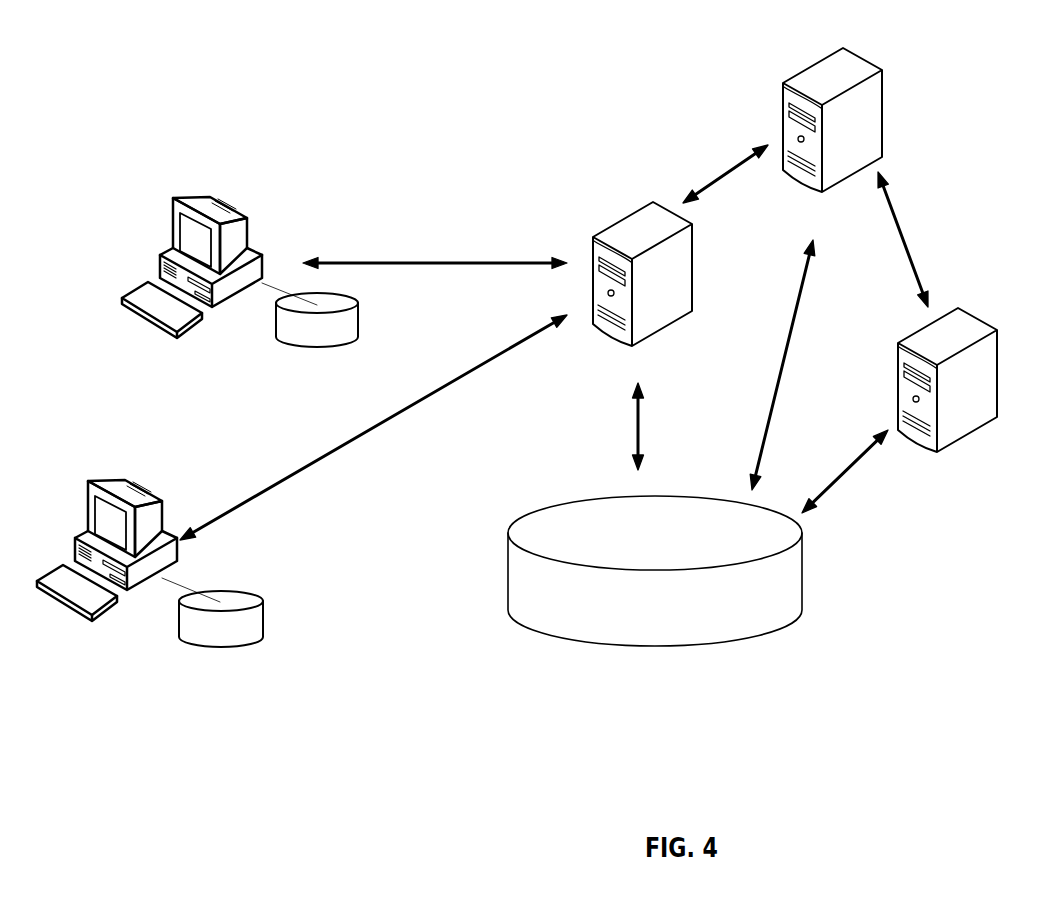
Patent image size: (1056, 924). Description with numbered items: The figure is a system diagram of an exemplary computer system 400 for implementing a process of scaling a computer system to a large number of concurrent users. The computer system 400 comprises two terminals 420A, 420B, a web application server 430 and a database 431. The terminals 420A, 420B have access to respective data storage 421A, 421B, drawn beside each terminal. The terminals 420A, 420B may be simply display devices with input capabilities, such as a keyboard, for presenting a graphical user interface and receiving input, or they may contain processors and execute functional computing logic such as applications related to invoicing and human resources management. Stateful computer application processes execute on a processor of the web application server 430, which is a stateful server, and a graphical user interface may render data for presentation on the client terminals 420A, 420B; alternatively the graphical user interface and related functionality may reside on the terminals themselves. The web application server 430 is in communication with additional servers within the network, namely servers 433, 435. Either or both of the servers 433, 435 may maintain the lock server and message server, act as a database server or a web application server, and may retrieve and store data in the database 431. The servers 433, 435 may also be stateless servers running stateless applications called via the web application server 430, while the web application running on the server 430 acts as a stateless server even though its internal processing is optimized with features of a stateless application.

The computer system 400 is at (452, 172).
The terminal 420A is at (188, 335).
The data storage 421A is at (318, 347).
The terminal 420B is at (128, 563).
The data storage 421B is at (220, 643).
The web application server 430 is at (617, 222).
The database 431 is at (655, 571).
The server 433 is at (797, 70).
The server 435 is at (978, 312).